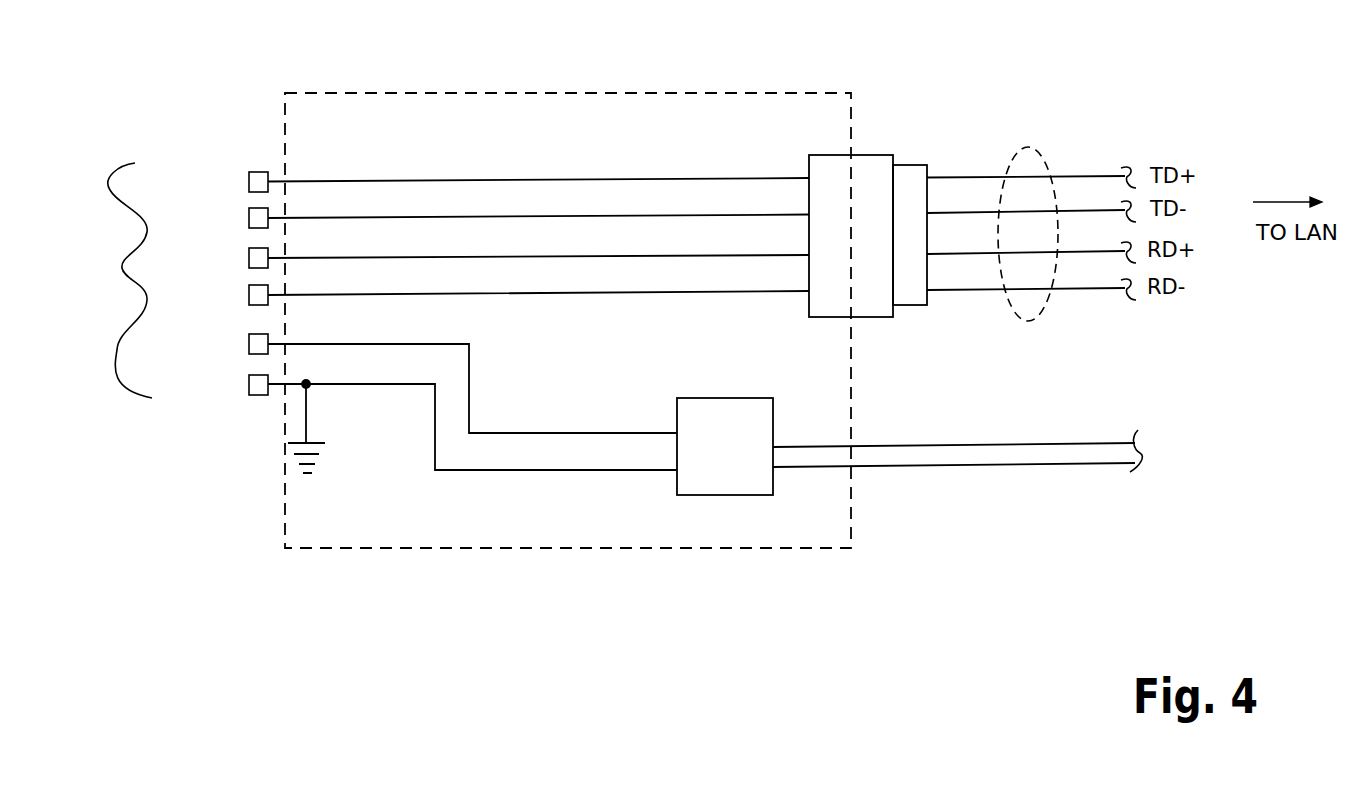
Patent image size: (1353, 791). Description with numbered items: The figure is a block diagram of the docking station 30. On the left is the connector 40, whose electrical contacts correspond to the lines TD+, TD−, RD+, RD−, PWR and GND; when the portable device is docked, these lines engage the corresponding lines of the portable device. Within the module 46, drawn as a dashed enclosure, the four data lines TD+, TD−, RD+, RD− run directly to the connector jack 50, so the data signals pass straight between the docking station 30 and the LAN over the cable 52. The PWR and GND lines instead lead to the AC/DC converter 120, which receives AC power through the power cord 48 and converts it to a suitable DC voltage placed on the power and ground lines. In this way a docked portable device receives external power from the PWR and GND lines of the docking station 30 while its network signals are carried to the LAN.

The docking station 30 is at (174, 88).
The connector 40 is at (146, 282).
The module 46 is at (540, 93).
The power cord 48 is at (1073, 467).
The connector jack 50 is at (868, 317).
The cable 52 is at (1027, 148).
The AC/DC converter 120 is at (764, 393).